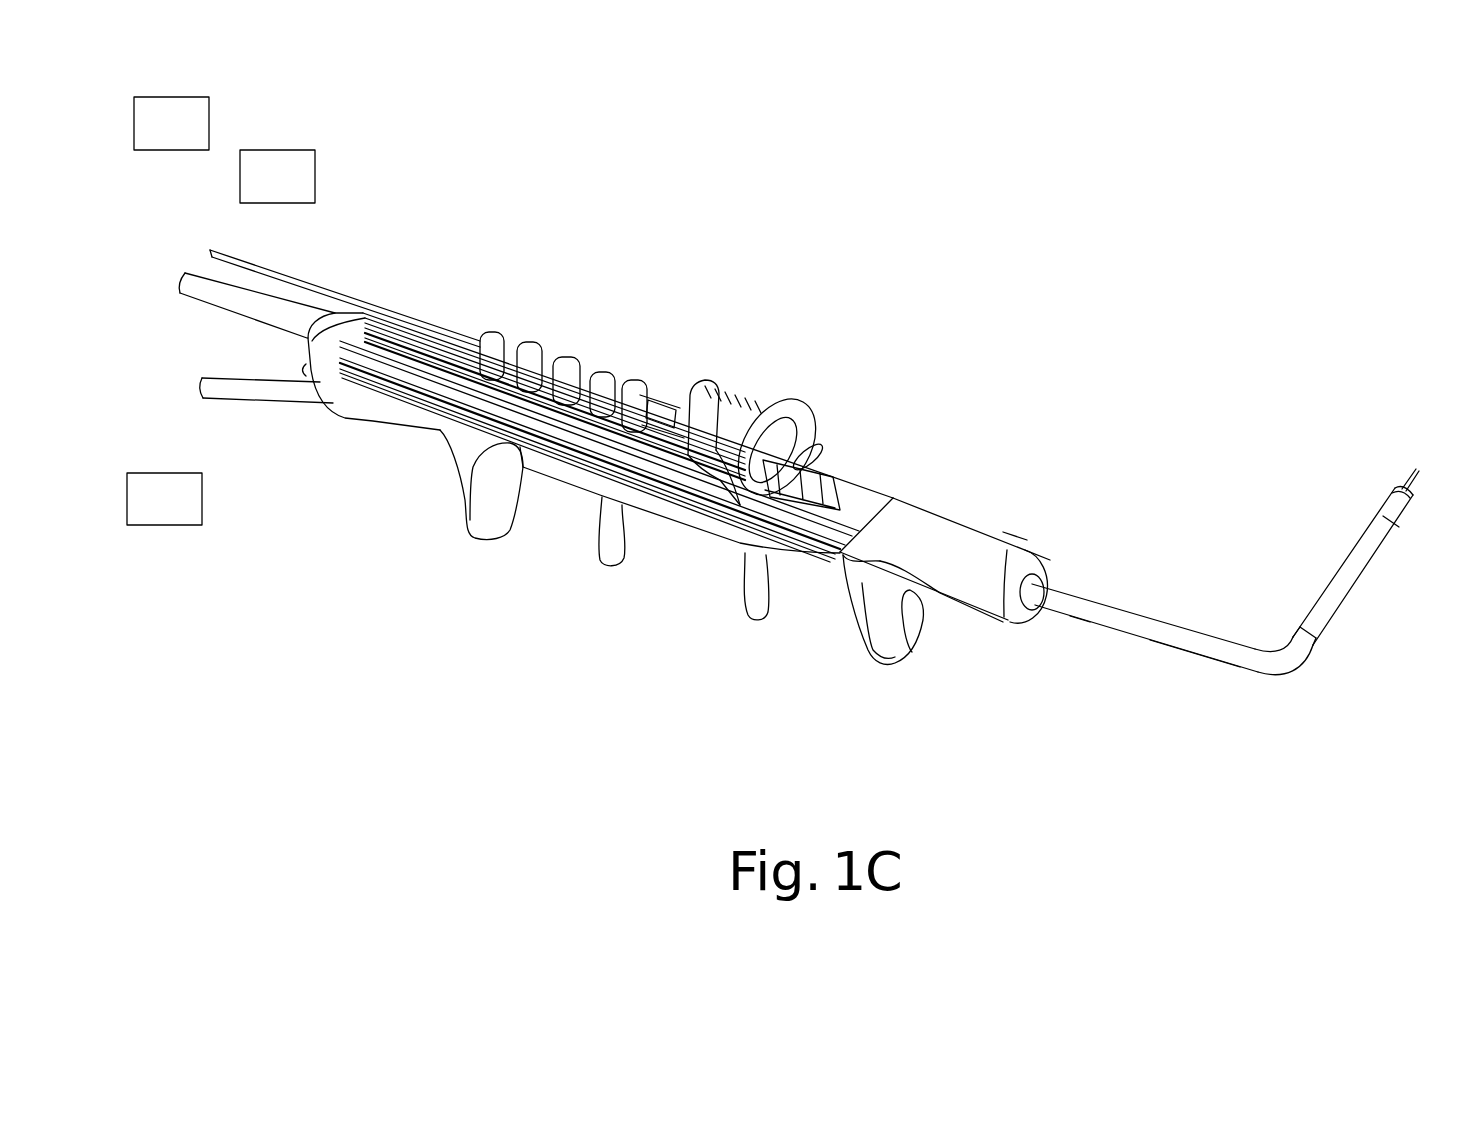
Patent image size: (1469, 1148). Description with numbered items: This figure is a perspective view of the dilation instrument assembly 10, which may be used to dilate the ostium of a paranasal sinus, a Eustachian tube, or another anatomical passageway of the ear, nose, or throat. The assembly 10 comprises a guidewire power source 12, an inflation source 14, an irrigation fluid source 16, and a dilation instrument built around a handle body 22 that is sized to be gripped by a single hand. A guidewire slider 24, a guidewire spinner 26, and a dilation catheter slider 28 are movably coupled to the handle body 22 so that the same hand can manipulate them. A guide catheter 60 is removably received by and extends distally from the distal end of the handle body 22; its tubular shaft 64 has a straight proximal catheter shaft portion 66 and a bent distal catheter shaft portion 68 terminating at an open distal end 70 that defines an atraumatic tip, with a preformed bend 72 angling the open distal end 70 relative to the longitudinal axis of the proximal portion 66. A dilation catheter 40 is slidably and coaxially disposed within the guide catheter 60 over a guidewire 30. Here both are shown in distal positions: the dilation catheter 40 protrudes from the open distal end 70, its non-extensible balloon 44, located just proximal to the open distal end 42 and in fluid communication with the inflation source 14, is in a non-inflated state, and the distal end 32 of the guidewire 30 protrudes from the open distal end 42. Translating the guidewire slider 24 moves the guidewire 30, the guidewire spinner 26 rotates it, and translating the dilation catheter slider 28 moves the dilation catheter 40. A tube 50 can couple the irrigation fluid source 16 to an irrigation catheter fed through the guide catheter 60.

The dilation instrument assembly 10 is at (1132, 195).
The guidewire power source 12 is at (208, 252).
The inflation source 14 is at (180, 275).
The irrigation fluid source 16 is at (202, 382).
The handle body 22 is at (957, 540).
The guidewire slider 24 is at (567, 360).
The guidewire spinner 26 is at (673, 407).
The dilation catheter slider 28 is at (753, 410).
The guidewire 30 is at (280, 273).
The distal end of guidewire 32 is at (1418, 470).
The dilation catheter 40 is at (217, 305).
The open distal end of dilation catheter 42 is at (1390, 488).
The non-extensible balloon 44 is at (1347, 578).
The tube 50 is at (252, 403).
The guide catheter 60 is at (1137, 617).
The tubular shaft 64 is at (1080, 618).
The straight proximal catheter shaft portion 66 is at (1185, 653).
The bent distal catheter shaft portion 68 is at (1297, 662).
The open distal end 70 is at (1317, 647).
The preformed bend 72 is at (1272, 673).